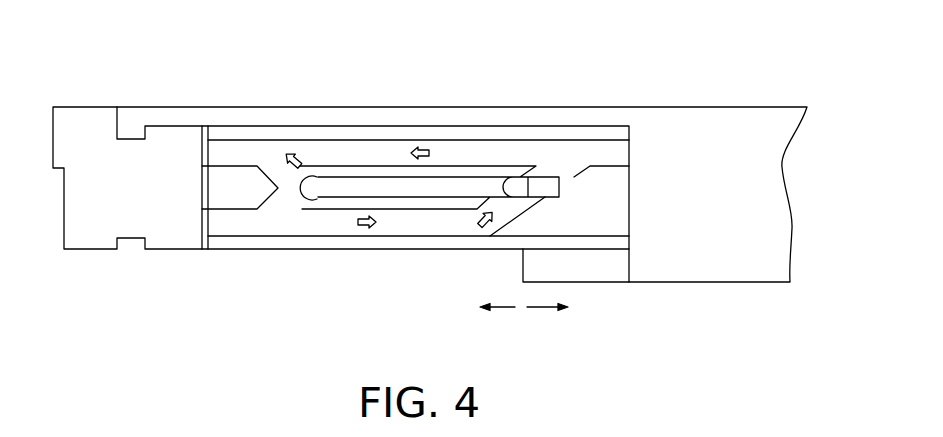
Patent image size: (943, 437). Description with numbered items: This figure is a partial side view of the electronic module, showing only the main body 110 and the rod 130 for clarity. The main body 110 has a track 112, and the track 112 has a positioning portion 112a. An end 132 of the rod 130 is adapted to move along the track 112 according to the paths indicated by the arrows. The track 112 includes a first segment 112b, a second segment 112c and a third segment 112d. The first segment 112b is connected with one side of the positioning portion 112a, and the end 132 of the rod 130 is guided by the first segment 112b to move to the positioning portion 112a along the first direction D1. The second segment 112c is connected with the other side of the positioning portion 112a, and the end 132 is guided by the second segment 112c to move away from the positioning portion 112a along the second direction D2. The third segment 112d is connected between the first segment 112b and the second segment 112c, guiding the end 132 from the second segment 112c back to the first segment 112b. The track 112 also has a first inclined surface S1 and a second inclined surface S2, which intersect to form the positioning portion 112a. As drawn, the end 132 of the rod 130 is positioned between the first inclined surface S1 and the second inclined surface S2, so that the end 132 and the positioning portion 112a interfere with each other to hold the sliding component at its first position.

The main body 110 is at (707, 270).
The track 112 is at (548, 152).
The positioning portion 112a is at (300, 315).
The first segment 112b is at (381, 160).
The second segment 112c is at (427, 230).
The third segment 112d is at (511, 213).
The rod 130 is at (405, 196).
The end of the rod 132 is at (309, 182).
The first inclined surface S1 is at (300, 174).
The second inclined surface S2 is at (298, 202).
The first direction D1 is at (500, 308).
The second direction D2 is at (540, 308).